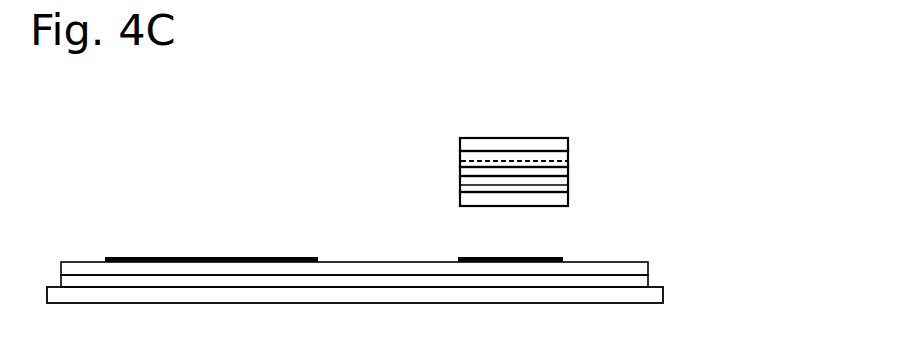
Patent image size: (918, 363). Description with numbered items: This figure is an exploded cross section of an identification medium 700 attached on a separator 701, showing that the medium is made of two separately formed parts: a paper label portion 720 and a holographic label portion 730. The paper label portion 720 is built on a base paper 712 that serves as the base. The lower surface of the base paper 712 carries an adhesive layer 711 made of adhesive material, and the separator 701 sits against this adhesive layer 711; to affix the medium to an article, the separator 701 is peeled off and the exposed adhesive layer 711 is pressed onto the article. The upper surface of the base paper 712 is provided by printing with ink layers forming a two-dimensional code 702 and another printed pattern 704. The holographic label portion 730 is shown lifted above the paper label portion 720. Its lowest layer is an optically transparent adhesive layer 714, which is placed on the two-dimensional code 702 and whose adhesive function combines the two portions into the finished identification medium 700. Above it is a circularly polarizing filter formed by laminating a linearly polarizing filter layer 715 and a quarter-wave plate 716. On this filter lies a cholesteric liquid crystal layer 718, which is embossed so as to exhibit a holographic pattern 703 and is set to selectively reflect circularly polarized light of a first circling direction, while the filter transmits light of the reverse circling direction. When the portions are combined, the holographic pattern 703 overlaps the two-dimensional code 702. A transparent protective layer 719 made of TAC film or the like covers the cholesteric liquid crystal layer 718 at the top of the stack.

The identification medium 700 is at (754, 137).
The holographic label portion 730 is at (661, 138).
The transparent protective layer 719 is at (560, 148).
The cholesteric liquid crystal layer 718 is at (473, 158).
The holographic figure 703 is at (548, 160).
The λ/4 plate 716 is at (462, 170).
The linearly polarizing filter layer 715 is at (562, 183).
The optically transparent adhesive layer 714 is at (462, 200).
The paper label portion 720 is at (669, 257).
The base paper 712 is at (455, 270).
The adhesive layer 711 is at (355, 282).
The separator 701 is at (258, 297).
The printed figure 704 is at (193, 258).
The two-dimensional code figure 702 is at (498, 257).